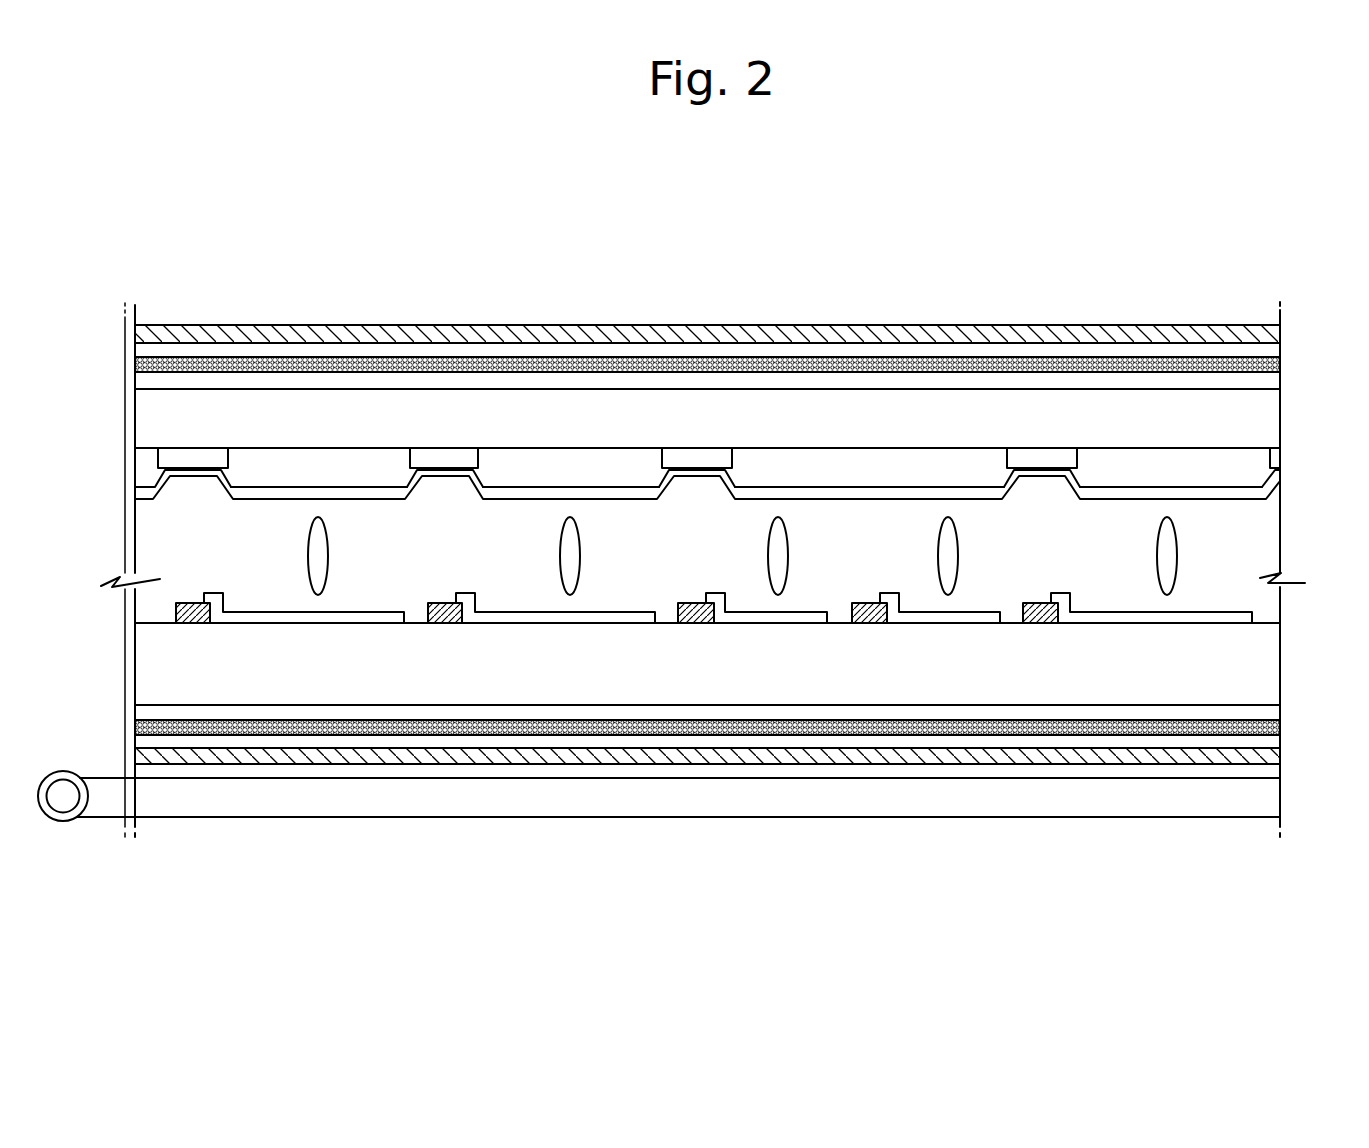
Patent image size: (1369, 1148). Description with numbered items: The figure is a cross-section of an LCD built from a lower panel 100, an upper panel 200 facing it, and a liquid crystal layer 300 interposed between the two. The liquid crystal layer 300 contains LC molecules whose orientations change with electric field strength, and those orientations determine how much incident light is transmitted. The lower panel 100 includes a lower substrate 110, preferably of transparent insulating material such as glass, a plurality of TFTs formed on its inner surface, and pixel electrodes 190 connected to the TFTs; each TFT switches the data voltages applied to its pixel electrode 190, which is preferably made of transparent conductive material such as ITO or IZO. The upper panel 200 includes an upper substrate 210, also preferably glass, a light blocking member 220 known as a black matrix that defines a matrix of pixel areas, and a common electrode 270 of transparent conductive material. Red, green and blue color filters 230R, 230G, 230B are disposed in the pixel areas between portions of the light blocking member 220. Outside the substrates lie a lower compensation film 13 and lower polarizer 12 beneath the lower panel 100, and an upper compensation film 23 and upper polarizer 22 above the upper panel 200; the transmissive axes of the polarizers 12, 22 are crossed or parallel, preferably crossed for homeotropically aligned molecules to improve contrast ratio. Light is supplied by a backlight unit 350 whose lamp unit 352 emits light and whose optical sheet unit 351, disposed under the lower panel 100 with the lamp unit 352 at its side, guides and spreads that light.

The upper panel 200 is at (215, 268).
The upper polarizer 22 is at (1265, 333).
The upper compensation film 23 is at (1265, 362).
The upper substrate 210 is at (1265, 417).
The light blocking member 220 is at (443, 460).
The red color filter 230R is at (330, 460).
The green color filter 230G is at (572, 460).
The blue color filter 230B is at (875, 460).
The common electrode 270 is at (700, 472).
The liquid crystal layer 300 is at (1277, 548).
The lower panel 100 is at (1262, 862).
The lower substrate 110 is at (1265, 663).
The lower compensation film 13 is at (1265, 727).
The lower polarizer 12 is at (1265, 755).
The thin film transistor TFT is at (1042, 623).
The pixel electrode 190 is at (1118, 623).
The backlight unit 350 is at (165, 895).
The optical sheet unit 351 is at (160, 820).
The lamp unit 352 is at (73, 822).